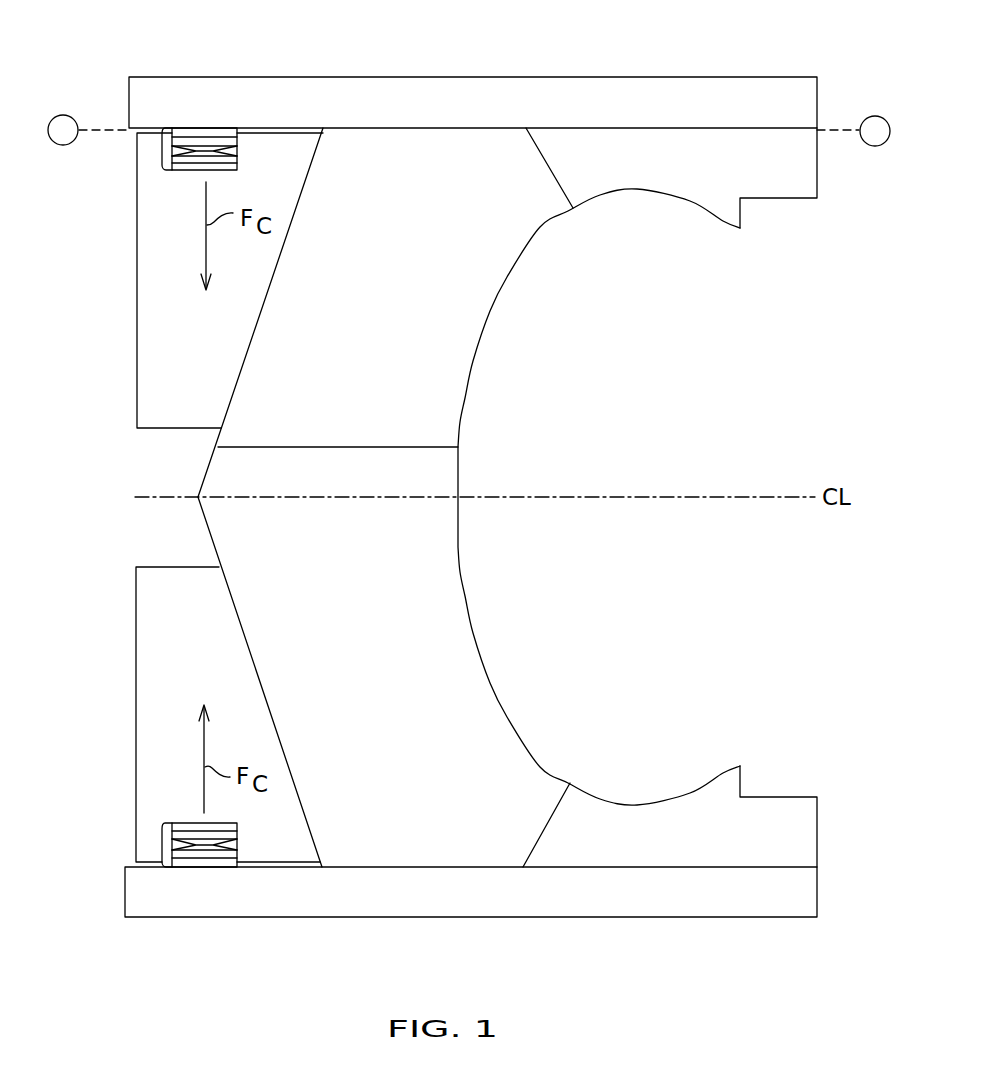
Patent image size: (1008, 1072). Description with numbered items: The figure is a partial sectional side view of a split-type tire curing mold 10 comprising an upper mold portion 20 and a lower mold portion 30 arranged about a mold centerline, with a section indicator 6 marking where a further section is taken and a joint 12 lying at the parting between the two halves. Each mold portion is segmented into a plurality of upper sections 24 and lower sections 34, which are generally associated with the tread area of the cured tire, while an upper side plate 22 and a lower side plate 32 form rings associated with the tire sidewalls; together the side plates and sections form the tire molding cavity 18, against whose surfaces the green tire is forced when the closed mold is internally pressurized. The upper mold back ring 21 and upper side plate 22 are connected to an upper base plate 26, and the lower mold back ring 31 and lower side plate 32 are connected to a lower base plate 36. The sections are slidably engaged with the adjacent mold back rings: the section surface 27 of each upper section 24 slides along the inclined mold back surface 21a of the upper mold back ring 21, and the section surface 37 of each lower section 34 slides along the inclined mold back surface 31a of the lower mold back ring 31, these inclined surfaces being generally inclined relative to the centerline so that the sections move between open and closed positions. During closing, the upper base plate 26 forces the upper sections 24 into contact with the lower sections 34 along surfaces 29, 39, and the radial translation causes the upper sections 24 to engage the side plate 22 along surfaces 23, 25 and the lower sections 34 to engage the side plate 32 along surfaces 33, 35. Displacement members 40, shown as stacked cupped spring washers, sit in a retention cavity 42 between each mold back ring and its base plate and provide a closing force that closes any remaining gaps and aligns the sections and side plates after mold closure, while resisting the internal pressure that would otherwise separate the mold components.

The split-type tire curing mold 10 is at (242, 53).
The section line 6- 6 is at (469, 130).
The joint / interface 12 is at (378, 448).
The tire molding cavity 18 is at (460, 551).
The upper mold portion 20 is at (700, 250).
The upper mold back ring 21 is at (195, 403).
The inclined mold back surface 21a is at (254, 330).
The upper side plate 22 is at (737, 173).
The engagement surface 23 is at (560, 192).
The upper section 24 is at (432, 325).
The engagement surface 25 is at (575, 167).
The upper base plate 26 is at (659, 115).
The section surface 27 is at (280, 263).
The contact surface 29 is at (333, 447).
The lower mold portion 30 is at (607, 682).
The lower mold back ring 31 is at (200, 613).
The inclined mold back surface 31a is at (257, 673).
The lower side plate 32 is at (723, 846).
The engagement surface 33 is at (555, 806).
The lower section 34 is at (395, 670).
The engagement surface 35 is at (552, 823).
The lower base plate 36 is at (661, 905).
The section surface 37 is at (280, 733).
The contact surface 39 is at (302, 449).
The displacement member 40 is at (163, 147).
The retention cavity 42 is at (185, 172).